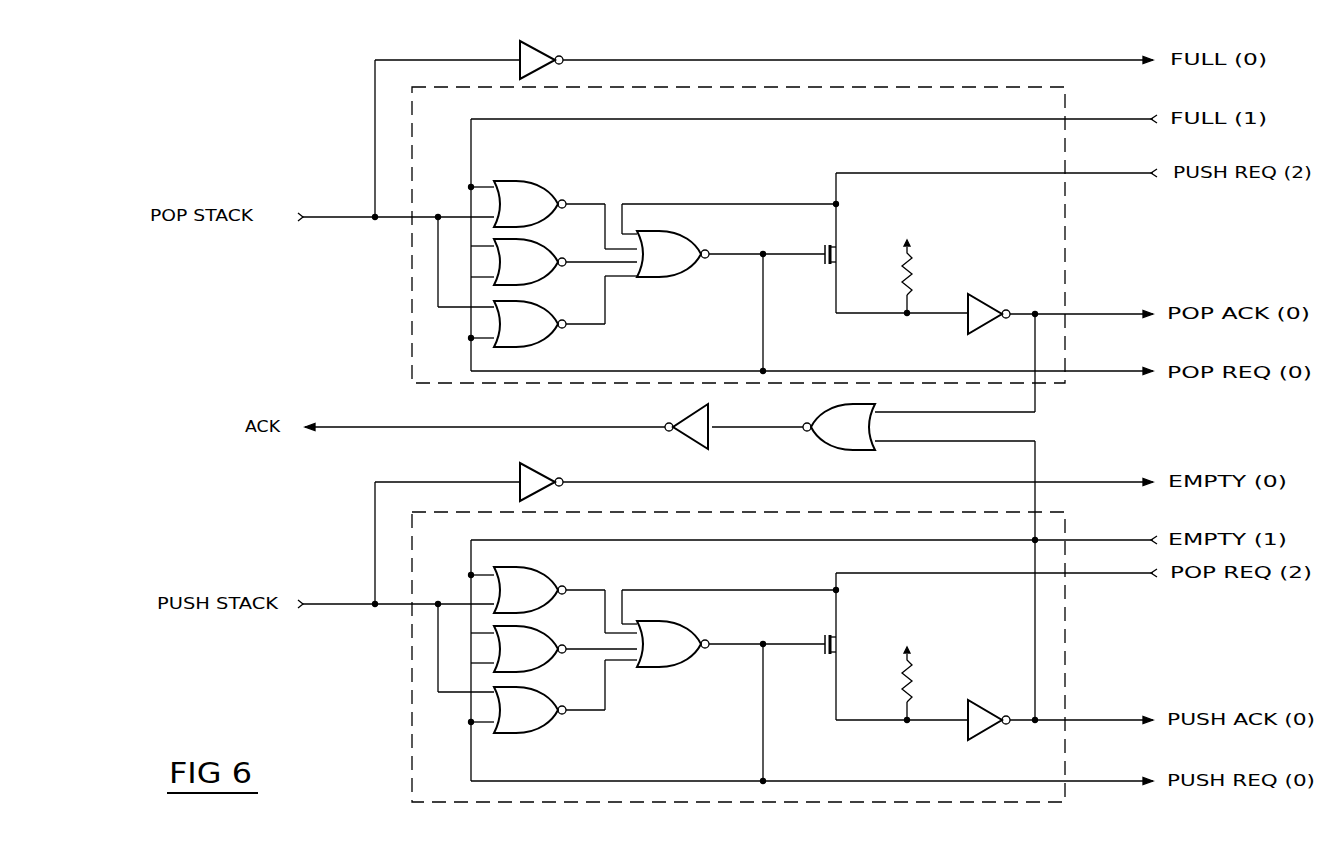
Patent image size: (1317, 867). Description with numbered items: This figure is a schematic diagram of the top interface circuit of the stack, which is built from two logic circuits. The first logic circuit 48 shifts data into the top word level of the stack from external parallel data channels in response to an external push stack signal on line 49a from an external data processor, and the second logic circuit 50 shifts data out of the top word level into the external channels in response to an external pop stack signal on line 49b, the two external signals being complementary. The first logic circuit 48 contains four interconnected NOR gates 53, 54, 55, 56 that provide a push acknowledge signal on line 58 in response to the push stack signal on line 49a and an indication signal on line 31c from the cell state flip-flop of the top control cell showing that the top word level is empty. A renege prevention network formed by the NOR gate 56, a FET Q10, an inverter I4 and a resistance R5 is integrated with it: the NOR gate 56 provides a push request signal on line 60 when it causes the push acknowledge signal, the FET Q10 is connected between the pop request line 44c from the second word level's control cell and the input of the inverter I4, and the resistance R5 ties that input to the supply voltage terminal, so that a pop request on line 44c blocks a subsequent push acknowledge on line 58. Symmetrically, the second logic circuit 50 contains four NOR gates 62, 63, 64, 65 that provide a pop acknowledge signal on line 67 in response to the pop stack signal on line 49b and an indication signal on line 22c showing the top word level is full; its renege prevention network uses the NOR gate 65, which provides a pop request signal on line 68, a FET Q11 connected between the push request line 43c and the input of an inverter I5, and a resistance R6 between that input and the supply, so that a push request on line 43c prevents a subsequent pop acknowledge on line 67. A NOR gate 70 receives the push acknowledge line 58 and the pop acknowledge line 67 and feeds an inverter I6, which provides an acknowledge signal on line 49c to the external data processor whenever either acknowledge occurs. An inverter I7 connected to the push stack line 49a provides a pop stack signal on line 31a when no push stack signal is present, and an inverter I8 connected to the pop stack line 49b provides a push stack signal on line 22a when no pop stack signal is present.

The second logic circuit 50 is at (412, 298).
The first logic circuit 48 is at (412, 714).
The push stack signal line 49a is at (308, 606).
The pop stack signal line 49b is at (308, 217).
The acknowledge signal line 49c is at (394, 426).
The push stack signal line 22a is at (863, 58).
The indication signal line 22c is at (867, 118).
The push request line 43c is at (929, 172).
The pop request line 44c is at (1123, 572).
The pop stack signal line 31a is at (1123, 482).
The indication signal line 31c is at (1122, 540).
The NOR gate 62 is at (541, 189).
The NOR gate 63 is at (541, 249).
The NOR gate 64 is at (541, 315).
The NOR gate 65 is at (684, 245).
The NOR gate 53 is at (545, 579).
The NOR gate 54 is at (545, 636).
The NOR gate 55 is at (545, 697).
The NOR gate 56 is at (681, 631).
The pop acknowledge signal line 67 is at (1108, 309).
The pop request signal line 68 is at (1109, 371).
The push acknowledge signal line 58 is at (1119, 716).
The push request signal line 60 is at (1126, 779).
The NOR gate 70 is at (830, 414).
The inverter I4 is at (973, 706).
The inverter I5 is at (973, 295).
The inverter I6 is at (686, 412).
The inverter I7 is at (541, 472).
The inverter I8 is at (539, 49).
The FET Q10 is at (848, 646).
The FET Q11 is at (848, 243).
The resistance R5 is at (920, 673).
The resistance R6 is at (921, 265).